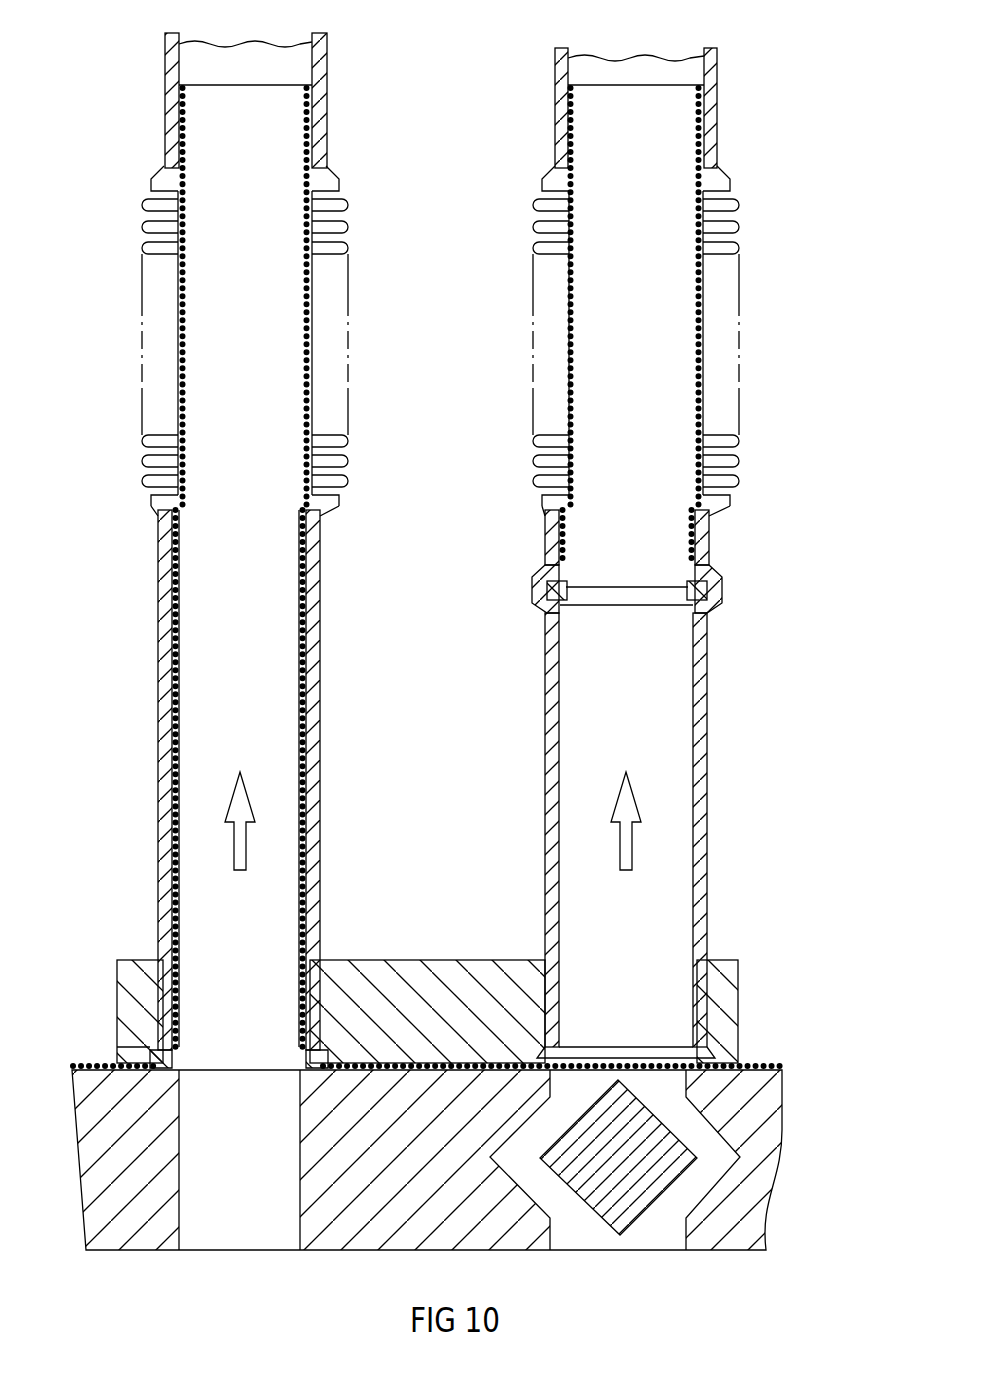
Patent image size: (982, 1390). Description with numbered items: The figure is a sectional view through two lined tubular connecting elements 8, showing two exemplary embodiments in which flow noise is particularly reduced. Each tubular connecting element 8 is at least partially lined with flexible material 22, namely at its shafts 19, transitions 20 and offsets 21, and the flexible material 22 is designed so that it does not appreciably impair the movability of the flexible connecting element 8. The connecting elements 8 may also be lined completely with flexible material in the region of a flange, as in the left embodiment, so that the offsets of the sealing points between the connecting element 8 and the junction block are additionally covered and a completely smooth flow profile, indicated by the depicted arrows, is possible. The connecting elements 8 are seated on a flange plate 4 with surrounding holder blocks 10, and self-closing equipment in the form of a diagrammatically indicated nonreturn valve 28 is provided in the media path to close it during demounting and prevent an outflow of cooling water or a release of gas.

The tubular connecting element 8 is at (524, 170).
The shaft 19 is at (740, 226).
The transition 20 is at (718, 184).
The flexible material 22 is at (166, 622).
The offset 21 is at (724, 590).
The holder block 10 is at (716, 968).
The flange plate 4 is at (740, 1100).
The nonreturn valve 28 is at (700, 1178).